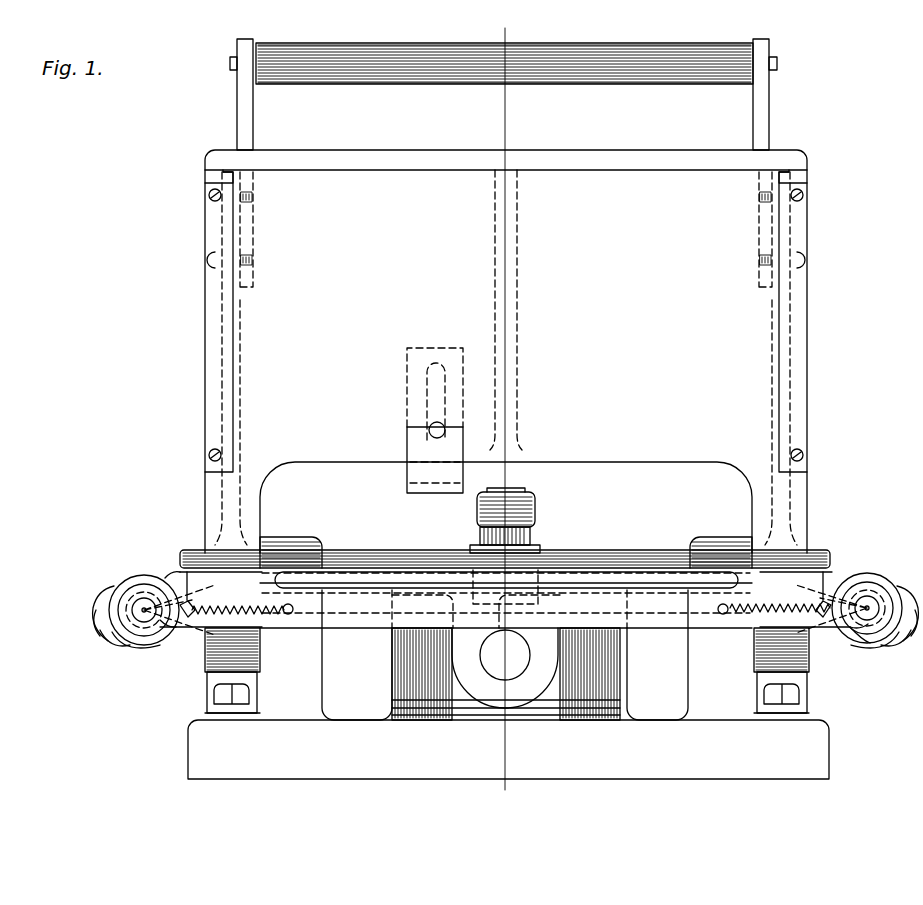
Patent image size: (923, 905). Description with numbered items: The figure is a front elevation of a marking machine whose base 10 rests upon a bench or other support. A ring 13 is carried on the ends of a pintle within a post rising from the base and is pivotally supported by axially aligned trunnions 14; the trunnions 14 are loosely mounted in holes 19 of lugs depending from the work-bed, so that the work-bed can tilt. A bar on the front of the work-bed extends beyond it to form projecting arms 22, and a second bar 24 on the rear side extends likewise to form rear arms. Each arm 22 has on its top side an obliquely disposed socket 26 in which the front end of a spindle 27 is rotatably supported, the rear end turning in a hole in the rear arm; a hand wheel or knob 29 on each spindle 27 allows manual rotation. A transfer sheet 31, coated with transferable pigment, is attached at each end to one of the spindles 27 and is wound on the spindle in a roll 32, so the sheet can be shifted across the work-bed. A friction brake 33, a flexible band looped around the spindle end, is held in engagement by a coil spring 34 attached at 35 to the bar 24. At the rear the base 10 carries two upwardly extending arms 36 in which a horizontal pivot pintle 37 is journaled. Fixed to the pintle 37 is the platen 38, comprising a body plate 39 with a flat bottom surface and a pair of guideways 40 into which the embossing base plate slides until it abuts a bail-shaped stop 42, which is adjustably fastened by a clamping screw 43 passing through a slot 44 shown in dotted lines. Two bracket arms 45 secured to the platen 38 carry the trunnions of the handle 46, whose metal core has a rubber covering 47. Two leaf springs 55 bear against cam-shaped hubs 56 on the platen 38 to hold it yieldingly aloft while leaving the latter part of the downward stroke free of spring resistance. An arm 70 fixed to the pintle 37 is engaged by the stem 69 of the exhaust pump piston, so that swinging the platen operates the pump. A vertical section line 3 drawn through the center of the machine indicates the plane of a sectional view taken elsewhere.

The section line 3- 3 is at (494, 791).
The base 10 is at (508, 749).
The ring 13 is at (602, 660).
The trunnions 14 is at (505, 655).
The holes 19 is at (484, 636).
The projecting arms 22 is at (128, 642).
The bar 24 is at (112, 596).
The socket 26 is at (96, 615).
The spindle 27 is at (143, 600).
The hand wheel or knob 29 is at (855, 640).
The transfer sheet 31 is at (185, 598).
The roll 32 is at (120, 628).
The friction brake 33 is at (155, 625).
The coil spring 34 is at (265, 617).
The attachment point 35 is at (291, 615).
The upwardly extending arms 36 is at (356, 705).
The pivot pintle 37 is at (660, 552).
The platen 38 is at (808, 480).
The body plate 39 is at (506, 361).
The guideways 40 is at (238, 175).
The stop 42 is at (410, 478).
The clamping screw 43 is at (430, 427).
The slotted bracket 44 is at (428, 393).
The bracket arms 45 is at (249, 128).
The handle 46 is at (598, 84).
The covering 47 is at (661, 68).
The leaf springs 55 is at (207, 693).
The cam-shaped hubs 56 is at (263, 518).
The stem 69 is at (533, 537).
The arm 70 is at (525, 503).